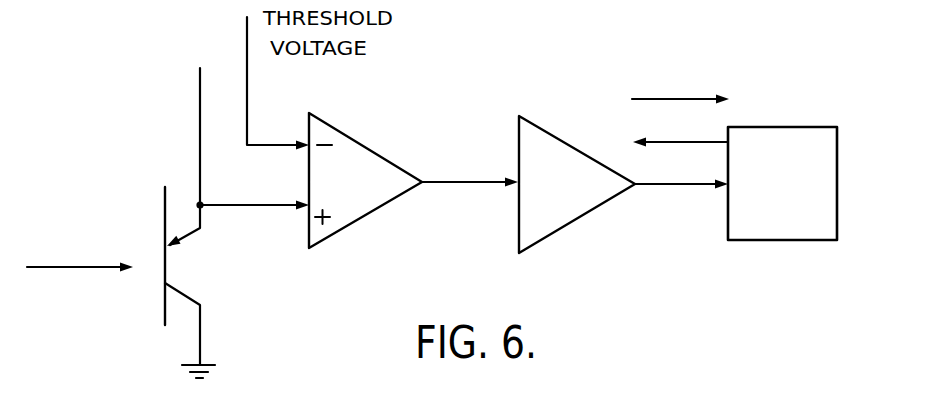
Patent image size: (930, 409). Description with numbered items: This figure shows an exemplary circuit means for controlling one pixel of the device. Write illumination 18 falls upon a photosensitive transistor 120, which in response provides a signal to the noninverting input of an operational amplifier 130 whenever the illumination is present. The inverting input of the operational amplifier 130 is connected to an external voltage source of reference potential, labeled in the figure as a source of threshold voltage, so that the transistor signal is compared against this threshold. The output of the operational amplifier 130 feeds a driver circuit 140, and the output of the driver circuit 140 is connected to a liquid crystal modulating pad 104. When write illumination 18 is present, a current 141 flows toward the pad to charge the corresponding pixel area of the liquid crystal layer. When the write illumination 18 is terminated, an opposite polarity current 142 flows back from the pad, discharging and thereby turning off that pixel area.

The write illumination 18 is at (88, 266).
The photosensitive transistor 120 is at (165, 267).
The operational amplifier 130 is at (353, 227).
The driver circuit 140 is at (560, 230).
The liquid crystal modulating pad 104 is at (793, 240).
The current 141 is at (693, 99).
The opposite polarity current 142 is at (667, 142).